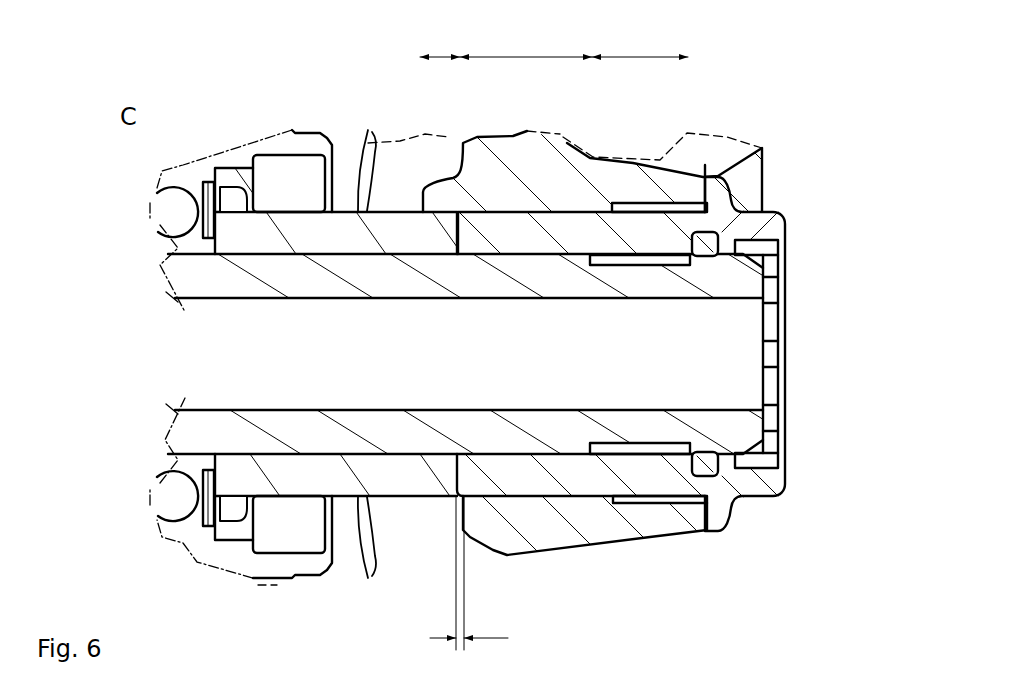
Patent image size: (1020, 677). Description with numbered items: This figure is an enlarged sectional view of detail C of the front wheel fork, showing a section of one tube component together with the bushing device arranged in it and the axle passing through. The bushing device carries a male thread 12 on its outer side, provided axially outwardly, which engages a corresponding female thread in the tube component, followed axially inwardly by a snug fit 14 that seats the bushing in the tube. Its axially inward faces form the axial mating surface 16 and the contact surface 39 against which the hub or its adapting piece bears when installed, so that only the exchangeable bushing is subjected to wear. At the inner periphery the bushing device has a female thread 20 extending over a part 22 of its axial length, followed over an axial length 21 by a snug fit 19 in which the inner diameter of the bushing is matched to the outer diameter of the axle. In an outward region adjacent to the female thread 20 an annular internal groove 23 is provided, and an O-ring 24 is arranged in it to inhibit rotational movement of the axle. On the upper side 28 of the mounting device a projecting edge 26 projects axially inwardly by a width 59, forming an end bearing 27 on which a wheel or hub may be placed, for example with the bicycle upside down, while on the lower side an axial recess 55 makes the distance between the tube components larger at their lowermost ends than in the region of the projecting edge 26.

The male thread 12 is at (643, 214).
The snug fit 14 is at (548, 272).
The axial mating surface 16 is at (473, 222).
The snug fit 19 is at (545, 215).
The female thread 20 is at (600, 268).
The axial length 21 is at (513, 55).
The part of the axial length 22 is at (620, 52).
The annular internal groove 23 is at (703, 246).
The O-ring 24 is at (705, 462).
The projecting edge 26 is at (443, 188).
The end bearing 27 is at (443, 188).
The upper side 28 is at (813, 194).
The contact surface 39 is at (446, 242).
The axial recess 55 is at (470, 573).
The width 59 is at (445, 56).